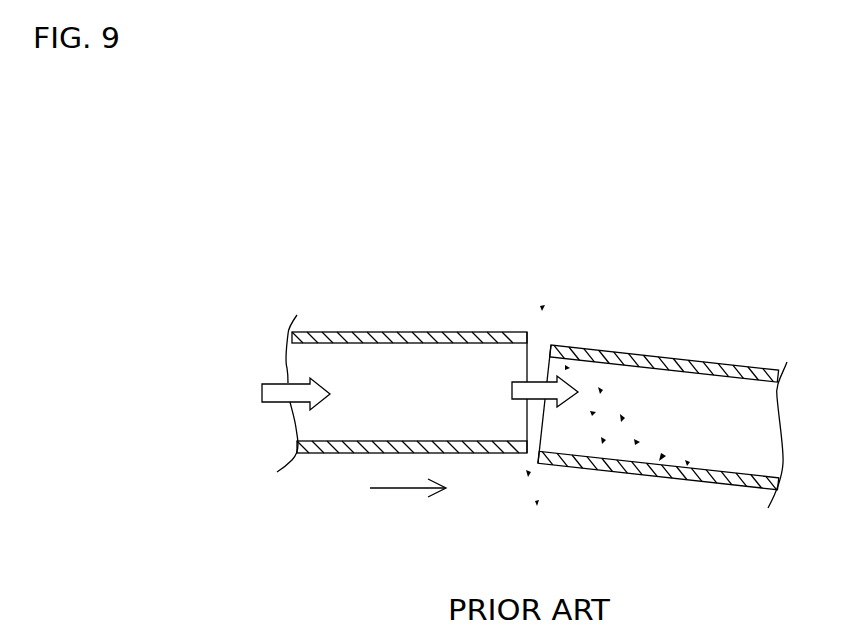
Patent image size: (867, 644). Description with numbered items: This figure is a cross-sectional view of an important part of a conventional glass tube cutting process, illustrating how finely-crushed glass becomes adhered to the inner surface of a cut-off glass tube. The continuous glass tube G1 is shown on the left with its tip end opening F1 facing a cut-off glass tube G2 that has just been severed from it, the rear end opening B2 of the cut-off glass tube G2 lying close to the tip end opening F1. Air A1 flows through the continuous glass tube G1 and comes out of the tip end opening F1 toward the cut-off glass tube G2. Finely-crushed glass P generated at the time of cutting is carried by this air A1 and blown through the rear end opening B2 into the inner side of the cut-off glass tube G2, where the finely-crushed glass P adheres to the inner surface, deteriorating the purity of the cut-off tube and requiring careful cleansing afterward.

The continuous glass tube G1 is at (385, 332).
The cut-off glass tube G2 is at (667, 357).
The tip end opening F1 is at (529, 370).
The rear end opening B2 is at (546, 376).
The air A1 is at (400, 393).
The finely-crushed glass P is at (661, 458).